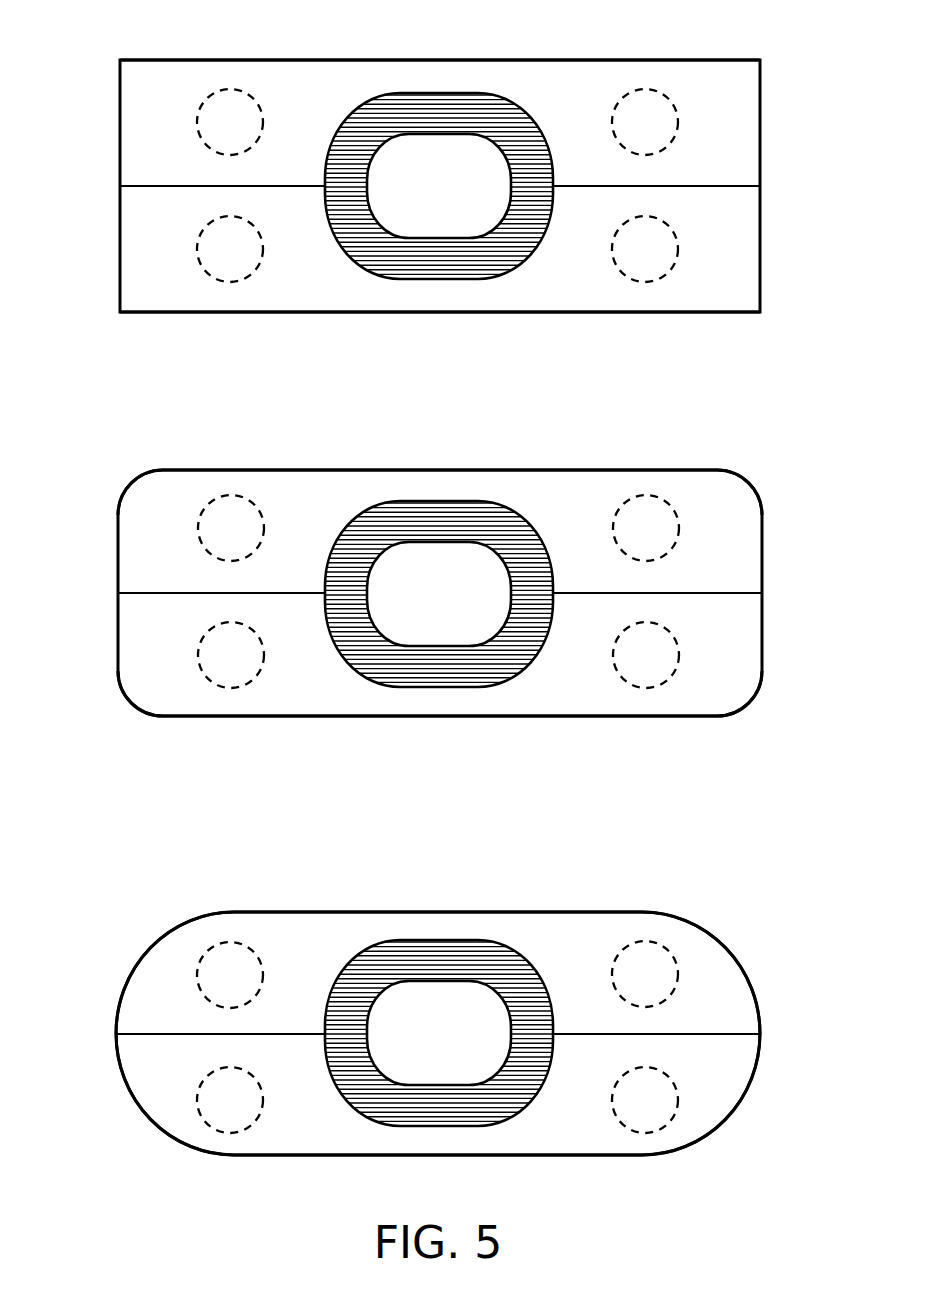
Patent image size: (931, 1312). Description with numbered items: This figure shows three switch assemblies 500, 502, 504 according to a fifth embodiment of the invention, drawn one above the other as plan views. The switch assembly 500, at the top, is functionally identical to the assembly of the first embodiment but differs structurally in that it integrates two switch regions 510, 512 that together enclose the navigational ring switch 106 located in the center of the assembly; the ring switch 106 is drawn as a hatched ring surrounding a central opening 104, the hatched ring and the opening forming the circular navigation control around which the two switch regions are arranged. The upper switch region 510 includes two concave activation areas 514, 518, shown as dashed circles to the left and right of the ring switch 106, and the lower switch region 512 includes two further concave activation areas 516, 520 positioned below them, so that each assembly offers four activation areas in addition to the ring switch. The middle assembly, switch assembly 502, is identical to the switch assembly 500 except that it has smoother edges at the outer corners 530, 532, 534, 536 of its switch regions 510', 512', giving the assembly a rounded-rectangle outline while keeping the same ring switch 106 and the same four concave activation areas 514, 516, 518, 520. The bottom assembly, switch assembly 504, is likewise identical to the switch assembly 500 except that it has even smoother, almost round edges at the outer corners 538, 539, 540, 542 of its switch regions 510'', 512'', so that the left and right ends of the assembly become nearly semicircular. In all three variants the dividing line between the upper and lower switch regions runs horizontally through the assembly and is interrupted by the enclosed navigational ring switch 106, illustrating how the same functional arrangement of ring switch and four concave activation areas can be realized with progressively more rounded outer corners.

The switch assembly 500 is at (784, 45).
The switch assembly 502 is at (790, 404).
The switch assembly 504 is at (780, 879).
The central bore 104 is at (463, 218).
The navigational ring switch 106 is at (430, 110).
The switch region 510 is at (440, 44).
The switch region 510' is at (440, 457).
The switch region 510'' is at (438, 900).
The switch region 512 is at (440, 322).
The switch region 512' is at (440, 728).
The switch region 512'' is at (438, 1176).
The concave activation area 514 is at (220, 108).
The concave activation area 516 is at (225, 262).
The concave activation area 518 is at (647, 112).
The concave activation area 520 is at (648, 260).
The outer corner 530 is at (126, 472).
The outer corner 532 is at (762, 469).
The outer corner 534 is at (119, 713).
The outer corner 536 is at (759, 713).
The outer corner 538 is at (152, 937).
The outer corner 539 is at (157, 1144).
The outer corner 540 is at (724, 937).
The outer corner 542 is at (719, 1141).